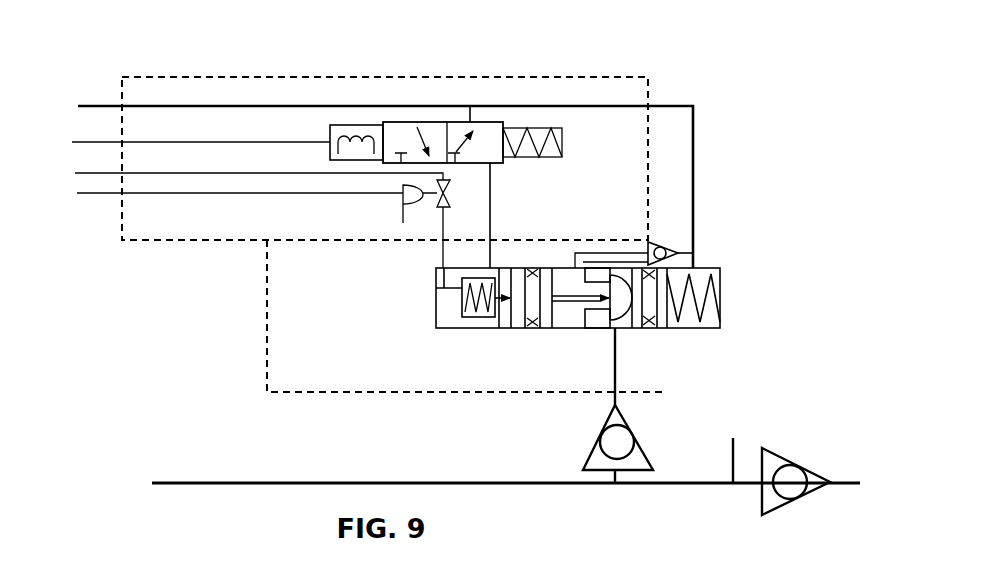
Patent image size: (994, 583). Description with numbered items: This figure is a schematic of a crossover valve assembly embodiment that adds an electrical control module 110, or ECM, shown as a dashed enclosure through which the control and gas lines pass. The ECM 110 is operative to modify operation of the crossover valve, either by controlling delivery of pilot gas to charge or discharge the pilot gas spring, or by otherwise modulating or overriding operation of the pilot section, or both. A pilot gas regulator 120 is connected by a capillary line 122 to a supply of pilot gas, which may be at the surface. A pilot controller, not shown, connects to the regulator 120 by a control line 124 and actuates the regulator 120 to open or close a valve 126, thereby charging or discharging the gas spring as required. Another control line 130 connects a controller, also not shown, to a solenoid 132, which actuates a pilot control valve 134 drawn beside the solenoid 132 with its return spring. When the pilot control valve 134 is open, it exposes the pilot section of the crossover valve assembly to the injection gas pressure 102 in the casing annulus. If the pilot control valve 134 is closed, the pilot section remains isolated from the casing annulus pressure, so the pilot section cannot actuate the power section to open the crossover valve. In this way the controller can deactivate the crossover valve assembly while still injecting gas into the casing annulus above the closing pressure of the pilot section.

The injection gas pressure 102 is at (283, 103).
The electrical control module 110 is at (603, 88).
The pilot gas regulator 120 is at (403, 223).
The capillary line 122 is at (145, 174).
The control line 124 is at (265, 196).
The valve 126 is at (442, 195).
The control line 130 is at (138, 143).
The solenoid 132 is at (324, 145).
The pilot control valve 134 is at (403, 114).